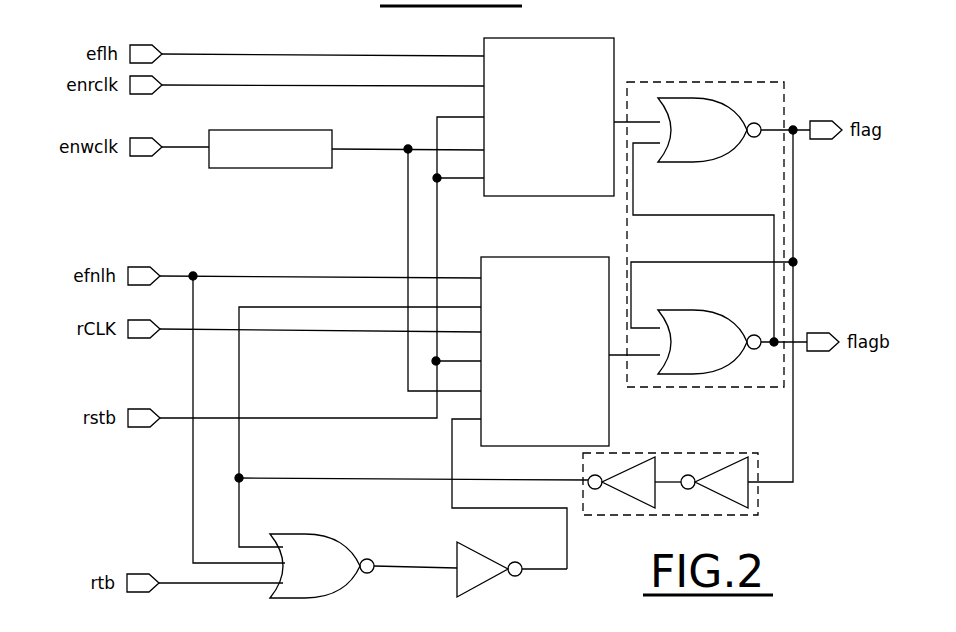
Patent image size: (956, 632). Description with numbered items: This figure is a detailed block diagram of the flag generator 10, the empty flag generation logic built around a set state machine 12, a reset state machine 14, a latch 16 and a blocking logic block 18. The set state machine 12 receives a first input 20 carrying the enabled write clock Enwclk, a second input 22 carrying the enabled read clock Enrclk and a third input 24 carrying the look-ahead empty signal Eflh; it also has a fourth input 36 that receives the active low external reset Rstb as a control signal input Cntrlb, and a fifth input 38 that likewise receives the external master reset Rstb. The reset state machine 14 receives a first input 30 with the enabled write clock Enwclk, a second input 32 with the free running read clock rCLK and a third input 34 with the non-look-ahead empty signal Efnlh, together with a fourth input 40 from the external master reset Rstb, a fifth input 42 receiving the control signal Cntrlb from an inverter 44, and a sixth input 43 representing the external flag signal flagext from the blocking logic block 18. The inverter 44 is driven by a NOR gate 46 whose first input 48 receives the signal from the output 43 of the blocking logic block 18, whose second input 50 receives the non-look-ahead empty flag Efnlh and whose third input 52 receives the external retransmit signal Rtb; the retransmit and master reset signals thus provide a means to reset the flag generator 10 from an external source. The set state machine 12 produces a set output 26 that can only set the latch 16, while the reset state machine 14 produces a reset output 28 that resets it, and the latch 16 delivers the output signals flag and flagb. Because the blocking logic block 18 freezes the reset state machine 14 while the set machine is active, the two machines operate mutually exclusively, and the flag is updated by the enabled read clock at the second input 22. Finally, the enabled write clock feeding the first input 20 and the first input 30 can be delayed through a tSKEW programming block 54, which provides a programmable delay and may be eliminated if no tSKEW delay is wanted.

The flag generator 10 is at (163, 1).
The set state machine 12 is at (615, 54).
The reset state machine 14 is at (523, 256).
The latch 16 is at (752, 82).
The blocking logic block 18 is at (758, 512).
The first input 20 is at (386, 152).
The second input 22 is at (392, 86).
The third input 24 is at (388, 56).
The set output 26 is at (613, 197).
The reset output 28 is at (617, 355).
The first input 30 is at (403, 357).
The second input 32 is at (334, 335).
The third input 34 is at (360, 277).
The fourth input 36 is at (441, 112).
The fifth input 38 is at (472, 182).
The fourth input 40 is at (430, 398).
The fifth input 42 is at (452, 448).
The sixth input 43 is at (296, 474).
The inverter 44 is at (478, 585).
The NOR gate 46 is at (322, 596).
The first input 48 is at (247, 547).
The second input 50 is at (258, 568).
The third input 52 is at (192, 588).
The tSKEW programming block 54 is at (255, 170).